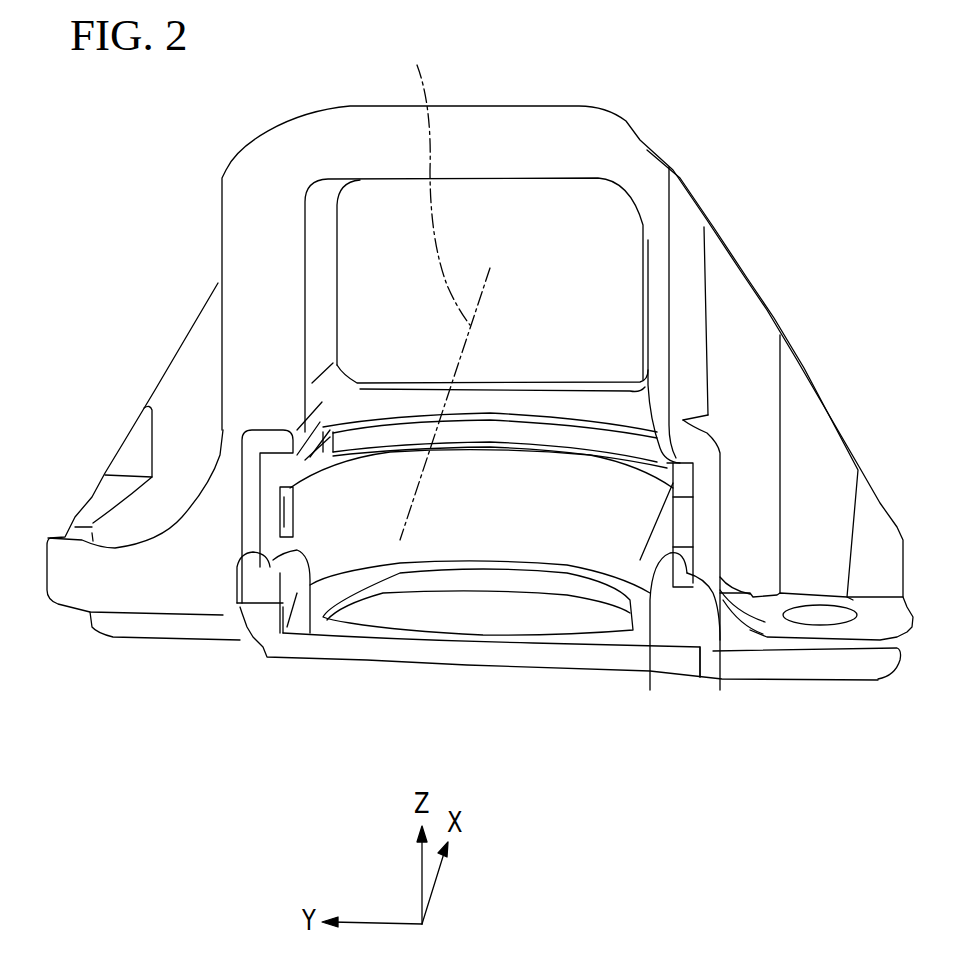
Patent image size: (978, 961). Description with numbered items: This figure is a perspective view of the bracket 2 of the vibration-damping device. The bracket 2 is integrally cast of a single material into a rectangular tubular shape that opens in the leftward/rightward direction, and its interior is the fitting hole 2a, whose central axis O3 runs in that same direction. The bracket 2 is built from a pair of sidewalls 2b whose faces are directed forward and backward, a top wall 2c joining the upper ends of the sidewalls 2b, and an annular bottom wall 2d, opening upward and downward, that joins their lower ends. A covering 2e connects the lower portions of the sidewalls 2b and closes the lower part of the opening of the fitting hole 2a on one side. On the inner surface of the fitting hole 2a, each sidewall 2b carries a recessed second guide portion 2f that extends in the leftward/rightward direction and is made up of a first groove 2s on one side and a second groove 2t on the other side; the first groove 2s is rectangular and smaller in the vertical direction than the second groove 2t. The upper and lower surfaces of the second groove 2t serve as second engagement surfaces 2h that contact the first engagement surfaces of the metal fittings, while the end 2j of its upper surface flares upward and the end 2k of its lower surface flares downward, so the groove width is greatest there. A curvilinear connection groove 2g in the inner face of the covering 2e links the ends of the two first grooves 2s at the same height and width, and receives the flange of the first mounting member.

The bracket 2 is at (610, 113).
The fitting hole 2a is at (414, 459).
The sidewalls 2b is at (243, 237).
The top wall 2c is at (502, 128).
The bottom wall 2d is at (577, 640).
The covering 2e is at (540, 373).
The second guide portion 2f is at (68, 377).
The connection groove 2g is at (415, 419).
The second engagement surface 2h is at (300, 553).
The end of the upper surface of the second groove 2j is at (293, 460).
The end of the lower surface of the second groove 2k is at (247, 557).
The first groove 2s is at (273, 458).
The second groove 2t is at (272, 505).
The central axis of the fitting hole O3 is at (442, 286).